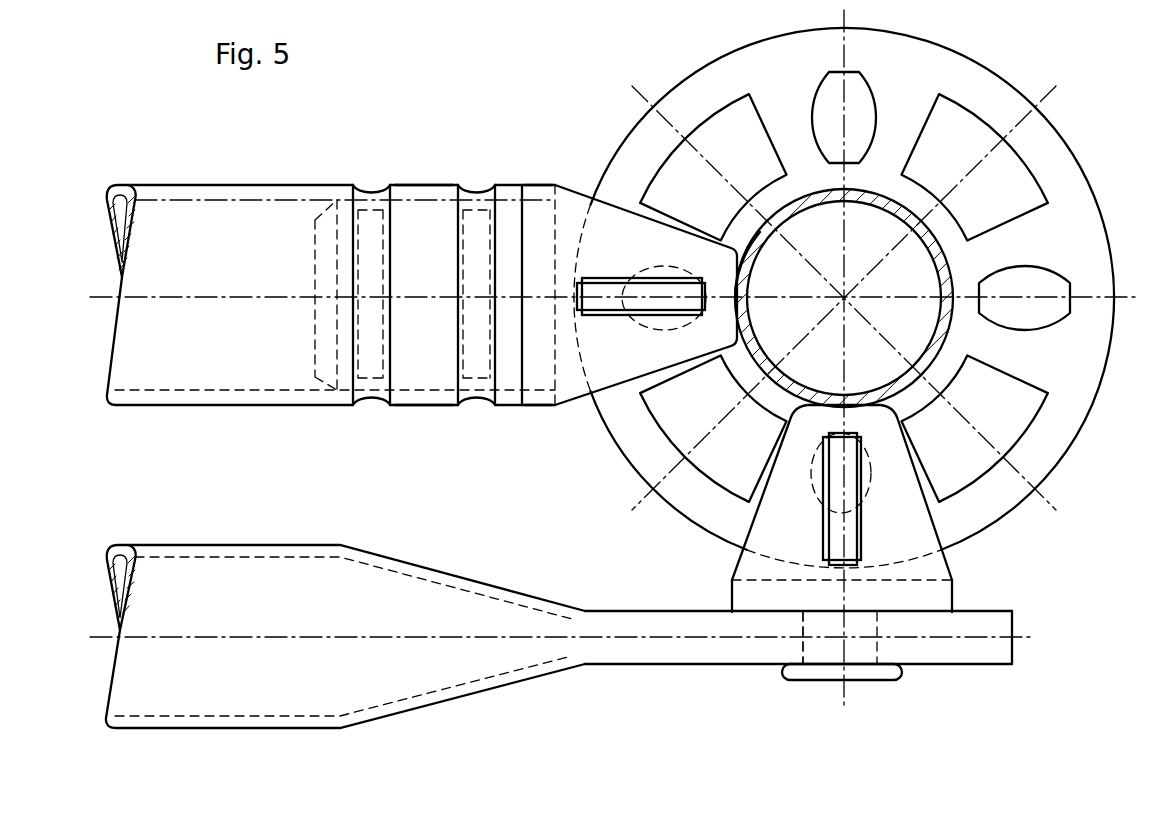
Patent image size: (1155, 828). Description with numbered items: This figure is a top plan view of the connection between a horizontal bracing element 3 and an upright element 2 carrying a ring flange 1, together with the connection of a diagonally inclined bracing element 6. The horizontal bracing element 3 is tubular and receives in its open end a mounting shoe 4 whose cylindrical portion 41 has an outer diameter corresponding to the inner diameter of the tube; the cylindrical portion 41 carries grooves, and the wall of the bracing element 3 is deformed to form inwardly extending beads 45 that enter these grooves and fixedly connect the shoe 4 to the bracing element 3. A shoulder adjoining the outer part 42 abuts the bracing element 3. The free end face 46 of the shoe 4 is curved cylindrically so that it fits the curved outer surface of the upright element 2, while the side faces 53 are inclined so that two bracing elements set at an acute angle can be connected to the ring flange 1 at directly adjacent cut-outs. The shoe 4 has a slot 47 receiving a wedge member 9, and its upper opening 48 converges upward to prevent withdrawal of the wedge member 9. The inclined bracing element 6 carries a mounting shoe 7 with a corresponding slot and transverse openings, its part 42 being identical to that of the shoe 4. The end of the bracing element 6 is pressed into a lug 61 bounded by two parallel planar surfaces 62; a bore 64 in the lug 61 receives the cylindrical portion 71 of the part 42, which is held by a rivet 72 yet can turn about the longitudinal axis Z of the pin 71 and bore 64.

The ring flange 1 is at (1058, 152).
The upright element 2 is at (945, 262).
The bracing element 3 is at (192, 218).
The mounting shoe 4 is at (743, 318).
The diagonally inclined bracing element 6 is at (185, 575).
The mounting shoe 7 is at (953, 590).
The wedge member 9 is at (829, 330).
The cylindrical portion 41 is at (410, 376).
The outer part 42 is at (537, 397).
The beads 45 is at (478, 186).
The free end face 46 is at (736, 321).
The slot 47 is at (517, 190).
The upper opening 48 is at (590, 318).
The side faces 53 is at (625, 208).
The lug 61 is at (816, 643).
The parallel planar surfaces 62 is at (683, 610).
The bore 64 is at (875, 644).
The cylindrical portion 71 is at (822, 655).
The rivet 72 is at (893, 678).
The longitudinal axis Z is at (845, 370).